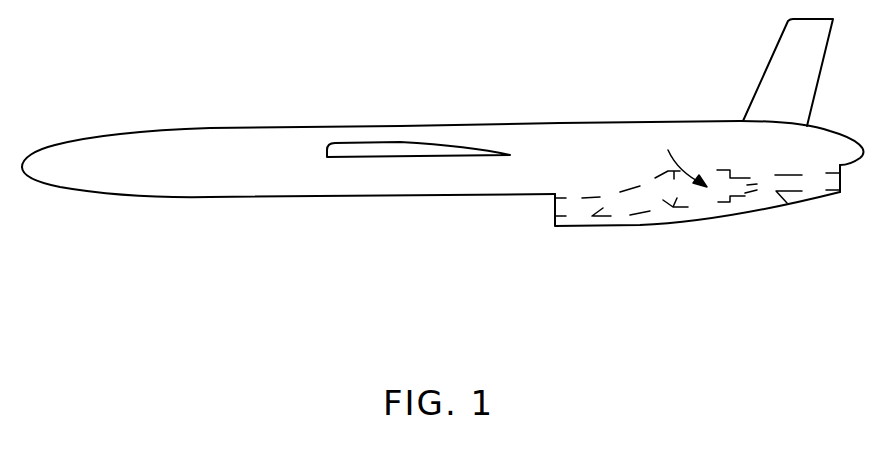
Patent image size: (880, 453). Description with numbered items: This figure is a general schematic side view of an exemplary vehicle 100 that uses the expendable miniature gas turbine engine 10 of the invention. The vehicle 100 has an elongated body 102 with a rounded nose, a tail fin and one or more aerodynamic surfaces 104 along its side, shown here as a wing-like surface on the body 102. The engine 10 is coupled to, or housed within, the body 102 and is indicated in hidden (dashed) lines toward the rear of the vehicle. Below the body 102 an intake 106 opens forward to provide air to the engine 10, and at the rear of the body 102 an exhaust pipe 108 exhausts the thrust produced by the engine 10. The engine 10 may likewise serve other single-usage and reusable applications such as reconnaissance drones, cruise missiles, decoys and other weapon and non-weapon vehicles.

The vehicle 100 is at (437, 92).
The body 102 is at (208, 128).
The aerodynamic surface 104 is at (365, 158).
The intake 106 is at (583, 230).
The exhaust pipe 108 is at (801, 218).
The expendable miniature gas turbine engine 10 is at (660, 133).